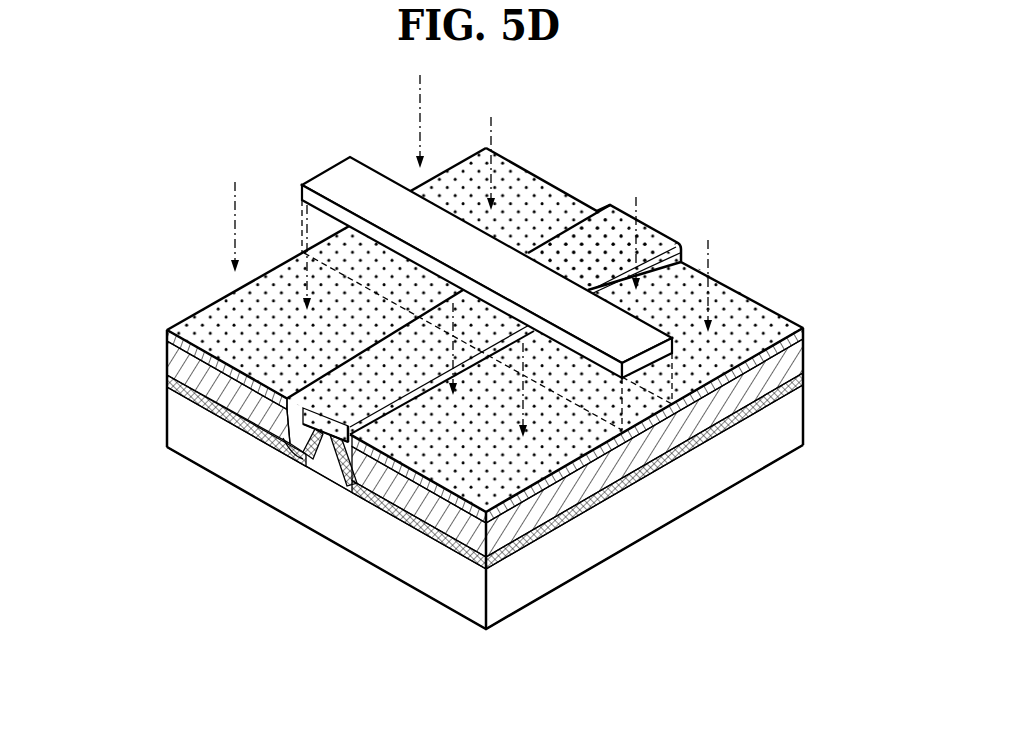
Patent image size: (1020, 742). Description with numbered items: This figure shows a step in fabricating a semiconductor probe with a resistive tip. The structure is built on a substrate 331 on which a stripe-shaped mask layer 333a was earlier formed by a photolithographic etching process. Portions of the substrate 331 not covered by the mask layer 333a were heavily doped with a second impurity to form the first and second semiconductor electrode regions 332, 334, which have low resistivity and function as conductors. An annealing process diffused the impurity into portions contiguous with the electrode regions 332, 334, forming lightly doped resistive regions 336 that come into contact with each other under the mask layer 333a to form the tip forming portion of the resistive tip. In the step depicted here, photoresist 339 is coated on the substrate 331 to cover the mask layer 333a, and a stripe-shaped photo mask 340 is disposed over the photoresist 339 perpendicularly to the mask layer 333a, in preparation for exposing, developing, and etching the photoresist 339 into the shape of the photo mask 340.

The substrate 331 is at (371, 553).
The first semiconductor electrode region 332 is at (166, 359).
The mask layer 333a is at (281, 452).
The second semiconductor electrode region 334 is at (448, 550).
The resistive regions 336 is at (327, 473).
The photoresist 339 is at (166, 334).
The photo mask 340 is at (330, 180).